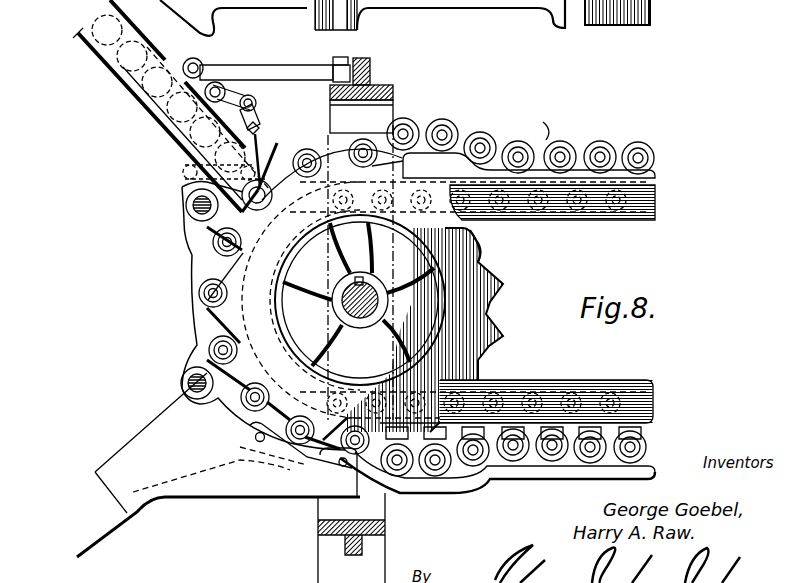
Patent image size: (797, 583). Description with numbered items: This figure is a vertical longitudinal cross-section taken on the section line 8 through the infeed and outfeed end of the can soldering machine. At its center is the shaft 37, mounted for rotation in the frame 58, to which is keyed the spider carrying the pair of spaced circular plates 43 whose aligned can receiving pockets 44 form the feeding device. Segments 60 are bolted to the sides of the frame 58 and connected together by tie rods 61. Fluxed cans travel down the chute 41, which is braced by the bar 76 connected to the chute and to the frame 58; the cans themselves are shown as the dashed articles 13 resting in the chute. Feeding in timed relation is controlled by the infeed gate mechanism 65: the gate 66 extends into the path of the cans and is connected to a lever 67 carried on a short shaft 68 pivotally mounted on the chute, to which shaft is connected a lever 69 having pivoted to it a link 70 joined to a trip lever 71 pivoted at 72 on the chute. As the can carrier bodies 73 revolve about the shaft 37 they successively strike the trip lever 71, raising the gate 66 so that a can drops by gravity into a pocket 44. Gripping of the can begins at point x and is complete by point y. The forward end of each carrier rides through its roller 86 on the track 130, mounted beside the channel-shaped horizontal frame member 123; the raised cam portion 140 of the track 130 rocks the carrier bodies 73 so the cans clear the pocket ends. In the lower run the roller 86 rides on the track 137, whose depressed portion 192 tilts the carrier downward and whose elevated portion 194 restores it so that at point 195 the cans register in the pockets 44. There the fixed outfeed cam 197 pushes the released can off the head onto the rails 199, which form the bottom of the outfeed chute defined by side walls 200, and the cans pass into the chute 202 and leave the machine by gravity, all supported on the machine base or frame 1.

The section line 8 is at (312, 33).
The chute 41 is at (140, 106).
The article 13 is at (163, 124).
The infeed gate mechanism 65 is at (185, 166).
The bar 76 is at (296, 70).
The short shaft 68 is at (215, 85).
The lever 69 is at (237, 97).
The lever 67 is at (253, 114).
The link 70 is at (257, 126).
The gate 66 is at (259, 143).
The trip lever 71 is at (282, 162).
The pivot 72 is at (182, 175).
The frame 58 is at (372, 84).
The plates 43 is at (482, 328).
The can receiving pockets 44 is at (485, 248).
The horizontal frame member 123 is at (592, 365).
The track 130 is at (656, 187).
The cam portion 140 is at (433, 160).
The shaft 37 is at (378, 303).
The segments 60 is at (197, 268).
The tie rods 61 is at (196, 207).
The point X x is at (310, 150).
The point Y y is at (366, 141).
The can carrier bodies 73 is at (525, 140).
The roller 86 is at (600, 143).
The track 137 is at (520, 471).
The depressed portion 192 is at (433, 488).
The chute 202 is at (128, 460).
The frame 1 is at (183, 498).
The side walls 200 is at (242, 481).
The rails 199 is at (280, 454).
The outfeed cam 197 is at (333, 462).
The elevated portion 194 is at (377, 478).
The point 195 is at (343, 468).